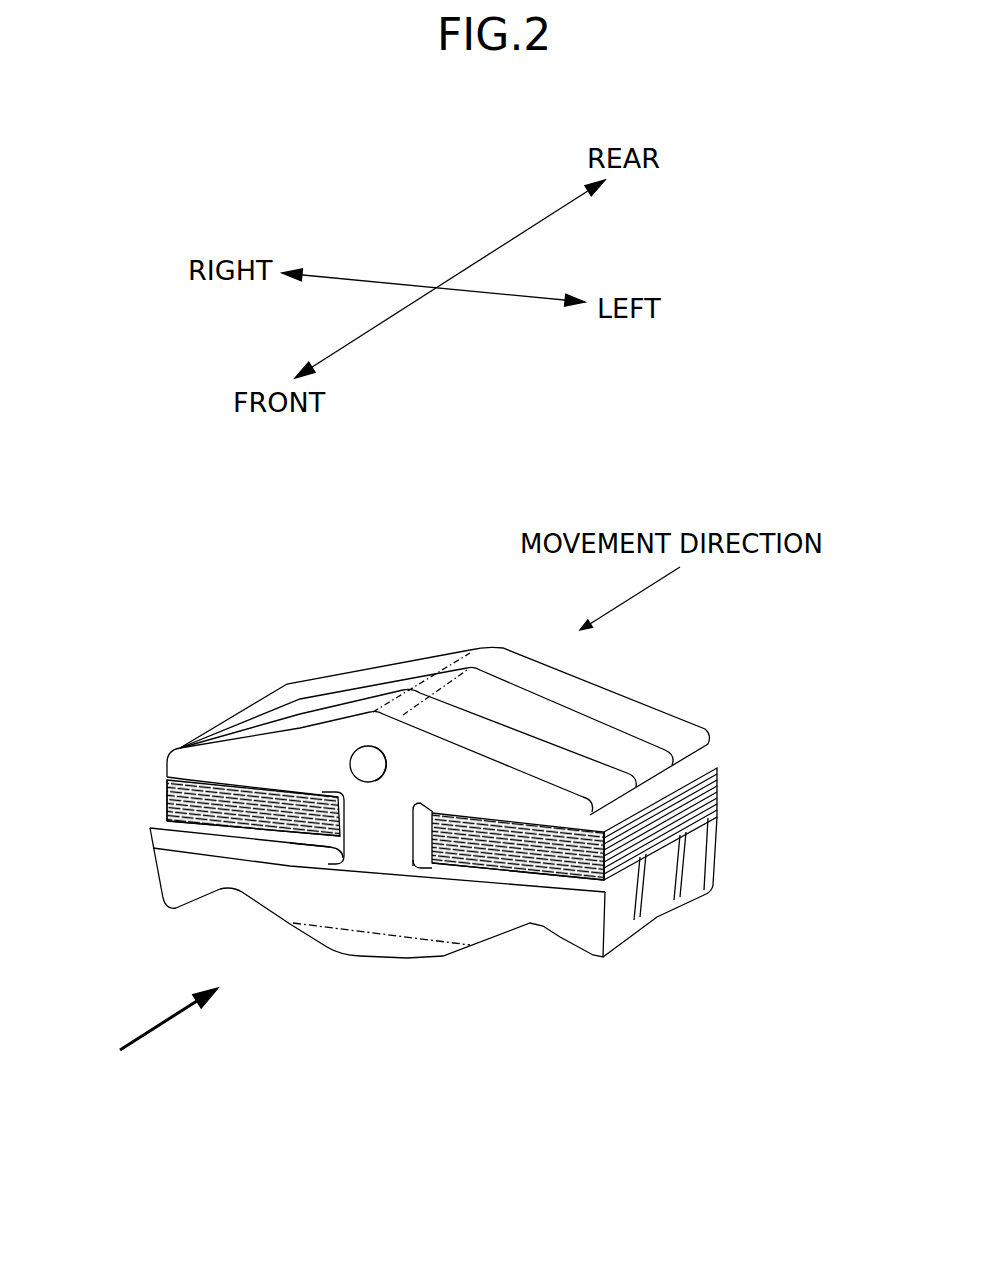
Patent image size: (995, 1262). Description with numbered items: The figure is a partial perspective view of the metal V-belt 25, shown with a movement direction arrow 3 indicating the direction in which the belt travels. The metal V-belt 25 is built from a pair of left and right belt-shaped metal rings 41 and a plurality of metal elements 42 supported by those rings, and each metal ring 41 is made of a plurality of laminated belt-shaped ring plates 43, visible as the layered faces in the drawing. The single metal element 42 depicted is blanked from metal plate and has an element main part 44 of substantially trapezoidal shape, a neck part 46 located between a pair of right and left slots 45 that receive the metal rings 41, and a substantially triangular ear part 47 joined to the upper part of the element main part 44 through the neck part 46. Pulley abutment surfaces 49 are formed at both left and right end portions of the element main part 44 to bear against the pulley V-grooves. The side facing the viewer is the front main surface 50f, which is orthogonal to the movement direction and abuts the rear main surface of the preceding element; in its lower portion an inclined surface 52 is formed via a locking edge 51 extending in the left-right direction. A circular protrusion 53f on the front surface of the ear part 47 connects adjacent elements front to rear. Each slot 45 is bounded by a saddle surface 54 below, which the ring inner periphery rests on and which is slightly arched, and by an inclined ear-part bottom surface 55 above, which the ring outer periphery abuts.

The movement direction arrow 3 is at (169, 1048).
The metal V-belt 25 is at (445, 633).
The metal ring 41 is at (683, 777).
The metal element 42 is at (413, 972).
The ring plate 43 is at (168, 795).
The element main part 44 is at (382, 913).
The slot 45 is at (300, 840).
The neck part 46 is at (383, 857).
The ear part 47 is at (250, 763).
The pulley abutment surface 49 is at (152, 862).
The front main surface 50f is at (395, 829).
The locking edge 51 is at (297, 868).
The inclined surface 52 is at (183, 887).
The circular protrusion 53f is at (366, 762).
The saddle surface 54 is at (182, 828).
The ear-part bottom surface 55 is at (267, 813).